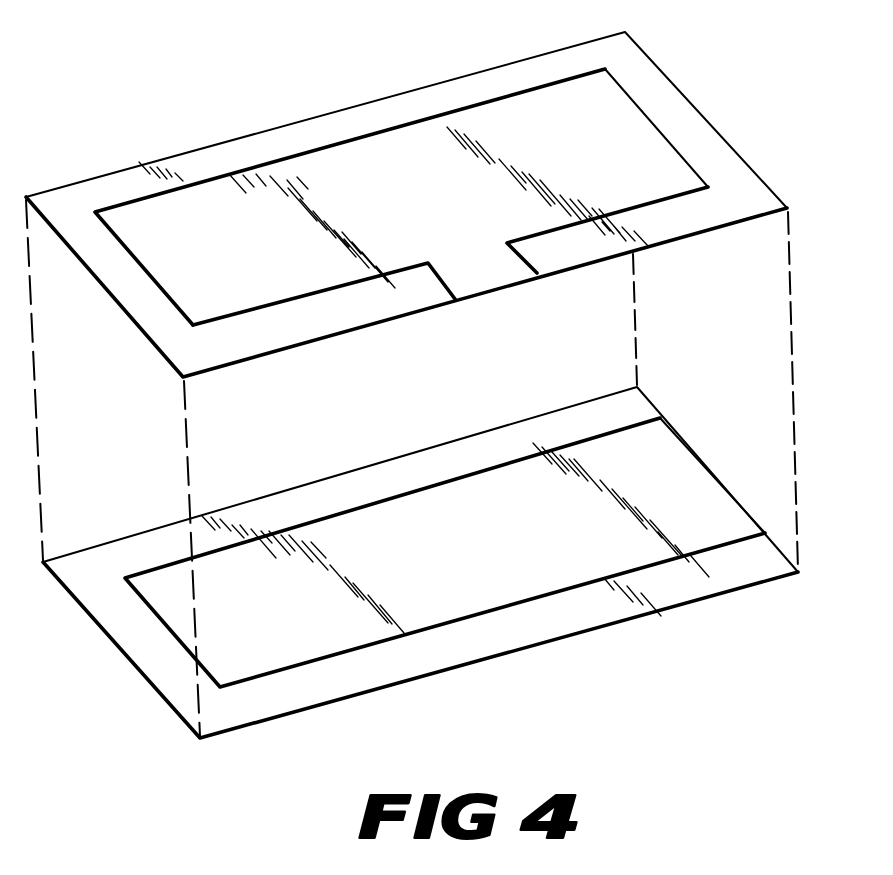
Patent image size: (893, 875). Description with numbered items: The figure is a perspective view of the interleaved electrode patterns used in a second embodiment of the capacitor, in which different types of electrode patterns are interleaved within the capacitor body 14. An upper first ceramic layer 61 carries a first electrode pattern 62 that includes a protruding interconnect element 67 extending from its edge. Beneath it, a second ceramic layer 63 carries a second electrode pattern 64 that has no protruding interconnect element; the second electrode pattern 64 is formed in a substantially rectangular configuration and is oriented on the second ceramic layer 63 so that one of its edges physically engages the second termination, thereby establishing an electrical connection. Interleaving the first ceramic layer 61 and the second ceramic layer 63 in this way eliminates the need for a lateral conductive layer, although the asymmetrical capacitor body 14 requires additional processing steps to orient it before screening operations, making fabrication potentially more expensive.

The capacitor body 14 is at (253, 114).
The first ceramic layer 61 is at (702, 218).
The first electrode pattern 62 is at (447, 136).
The second ceramic layer 63 is at (502, 447).
The second electrode pattern 64 is at (693, 497).
The protruding interconnect element 67 is at (473, 274).